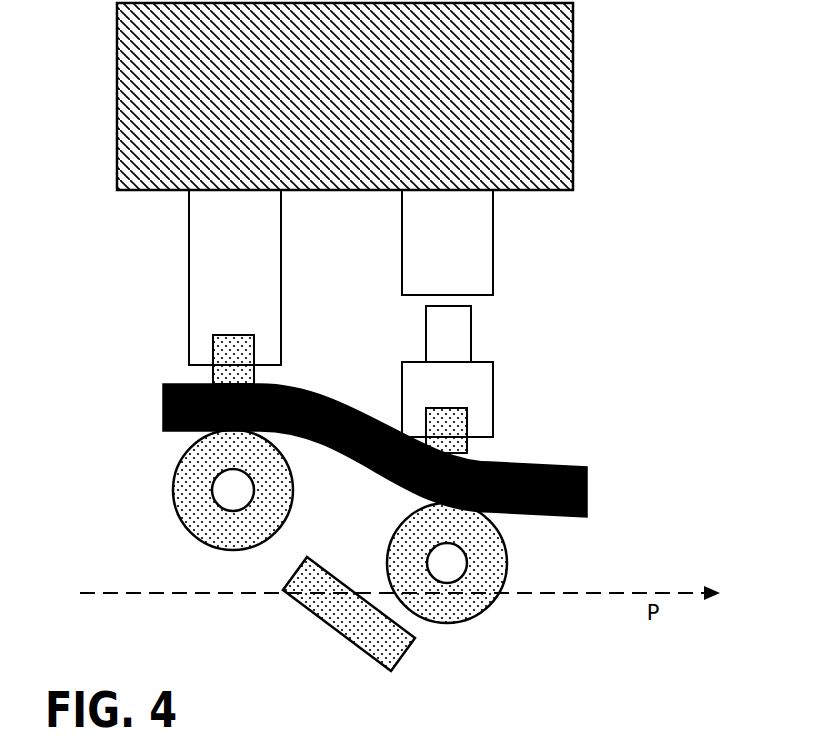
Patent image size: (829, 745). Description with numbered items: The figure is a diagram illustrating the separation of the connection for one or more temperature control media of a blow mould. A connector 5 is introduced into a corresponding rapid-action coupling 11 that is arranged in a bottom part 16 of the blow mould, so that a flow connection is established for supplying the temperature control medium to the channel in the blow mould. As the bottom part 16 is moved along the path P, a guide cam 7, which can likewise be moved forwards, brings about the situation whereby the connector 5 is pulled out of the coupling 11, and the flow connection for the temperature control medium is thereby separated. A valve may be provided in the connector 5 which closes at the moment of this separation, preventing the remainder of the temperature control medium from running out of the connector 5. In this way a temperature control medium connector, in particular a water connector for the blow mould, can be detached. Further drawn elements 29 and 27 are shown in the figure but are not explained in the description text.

The bottom part 16 is at (157, 155).
The coupling 11 is at (480, 240).
The connector 5 is at (492, 377).
The pressure pad 29 is at (470, 448).
The guide cam 7 is at (168, 413).
The guide rollers and support 27 is at (228, 538).